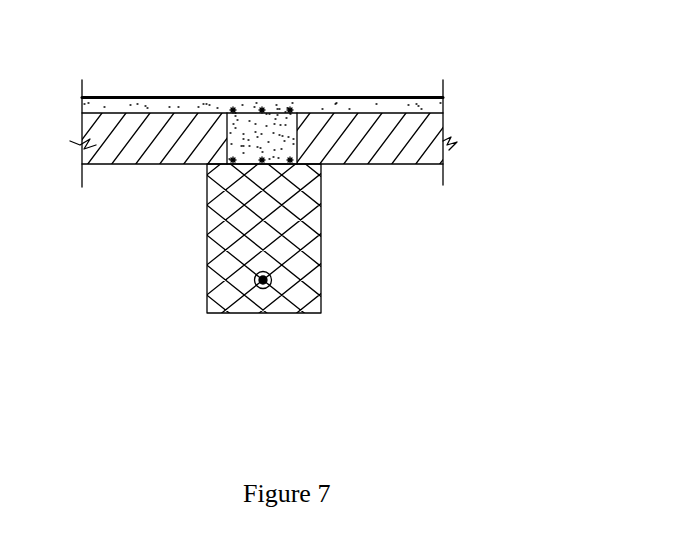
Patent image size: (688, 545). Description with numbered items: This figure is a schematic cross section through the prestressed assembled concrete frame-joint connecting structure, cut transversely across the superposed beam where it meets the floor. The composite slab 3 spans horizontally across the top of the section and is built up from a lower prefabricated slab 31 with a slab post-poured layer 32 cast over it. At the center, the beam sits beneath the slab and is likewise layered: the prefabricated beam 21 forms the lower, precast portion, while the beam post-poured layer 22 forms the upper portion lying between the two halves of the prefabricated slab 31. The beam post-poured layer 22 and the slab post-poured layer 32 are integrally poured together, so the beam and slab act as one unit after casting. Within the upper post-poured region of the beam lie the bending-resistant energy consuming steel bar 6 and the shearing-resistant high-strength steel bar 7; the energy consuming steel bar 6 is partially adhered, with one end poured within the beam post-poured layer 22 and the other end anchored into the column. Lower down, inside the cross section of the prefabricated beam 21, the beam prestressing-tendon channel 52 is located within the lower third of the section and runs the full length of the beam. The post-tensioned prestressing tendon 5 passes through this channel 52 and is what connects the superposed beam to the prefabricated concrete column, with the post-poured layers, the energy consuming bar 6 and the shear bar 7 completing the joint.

The composite slab 3 is at (298, 126).
The slab post-poured layer 32 is at (120, 96).
The prefabricated slab 31 is at (121, 160).
The beam post-poured layer 22 is at (250, 124).
The bending-resistant energy consuming steel bar 6 is at (293, 110).
The shearing-resistant high-strength steel bar 7 is at (292, 161).
The prefabricated beam 21 is at (288, 300).
The post-tensioned prestressing tendon 5 is at (273, 278).
The beam prestressing-tendon channel 52 is at (256, 280).